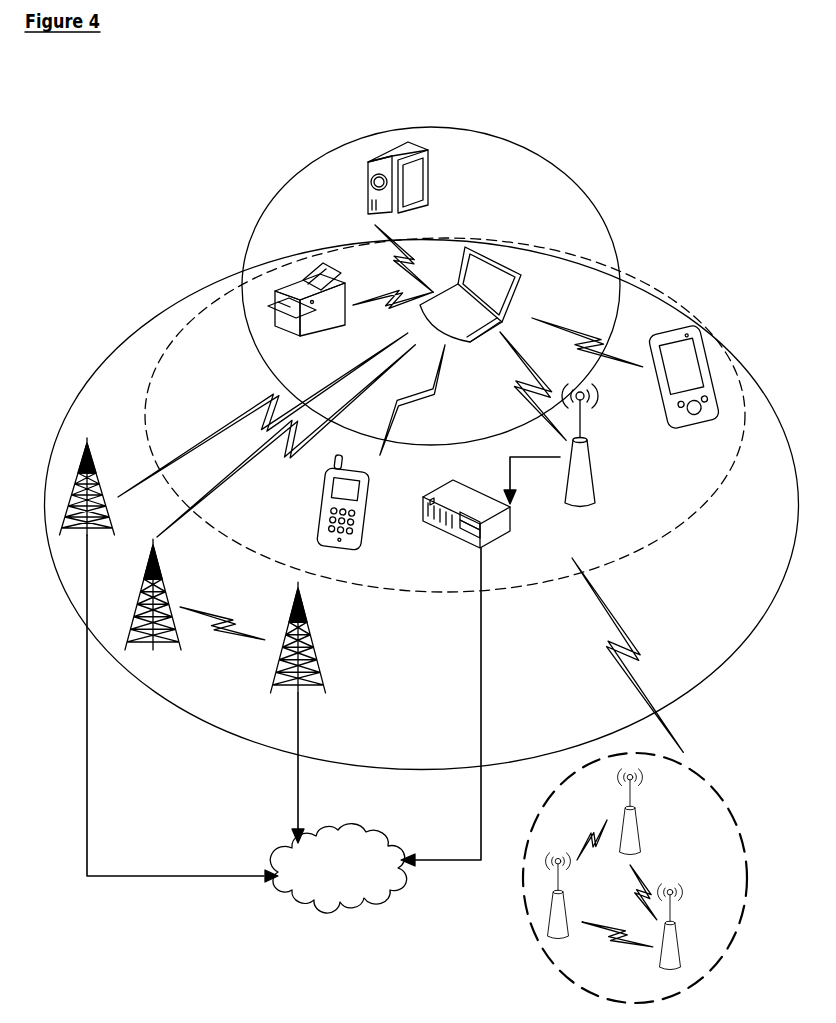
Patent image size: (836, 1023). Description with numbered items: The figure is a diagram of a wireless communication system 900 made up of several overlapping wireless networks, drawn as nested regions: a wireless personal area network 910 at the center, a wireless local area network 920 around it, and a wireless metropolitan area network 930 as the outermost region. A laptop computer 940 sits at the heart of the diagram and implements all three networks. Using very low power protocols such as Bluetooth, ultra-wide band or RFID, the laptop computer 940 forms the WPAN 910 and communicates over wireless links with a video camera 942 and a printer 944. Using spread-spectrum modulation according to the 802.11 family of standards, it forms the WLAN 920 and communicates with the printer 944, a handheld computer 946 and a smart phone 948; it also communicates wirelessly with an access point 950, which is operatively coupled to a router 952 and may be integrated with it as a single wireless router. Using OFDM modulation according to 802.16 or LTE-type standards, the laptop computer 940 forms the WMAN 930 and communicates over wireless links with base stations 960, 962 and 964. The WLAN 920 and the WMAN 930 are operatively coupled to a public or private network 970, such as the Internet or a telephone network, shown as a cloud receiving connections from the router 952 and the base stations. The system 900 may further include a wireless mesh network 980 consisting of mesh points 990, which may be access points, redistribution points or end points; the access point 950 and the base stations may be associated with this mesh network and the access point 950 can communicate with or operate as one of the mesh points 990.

The wireless communication system 900 is at (648, 156).
The wireless personal area network 910 is at (243, 262).
The wireless local area network 920 is at (190, 328).
The wireless metropolitan area network 930 is at (125, 340).
The laptop computer 940 is at (500, 250).
The video camera 942 is at (432, 190).
The printer 944 is at (341, 318).
The handheld computer 946 is at (680, 428).
The smart phone 948 is at (360, 541).
The access point 950 is at (595, 507).
The router 952 is at (497, 548).
The base station 960 is at (88, 431).
The base station 962 is at (158, 603).
The base station 964 is at (308, 665).
The network 970 is at (390, 834).
The wireless mesh network 980 is at (693, 781).
The mesh points 990 is at (663, 855).